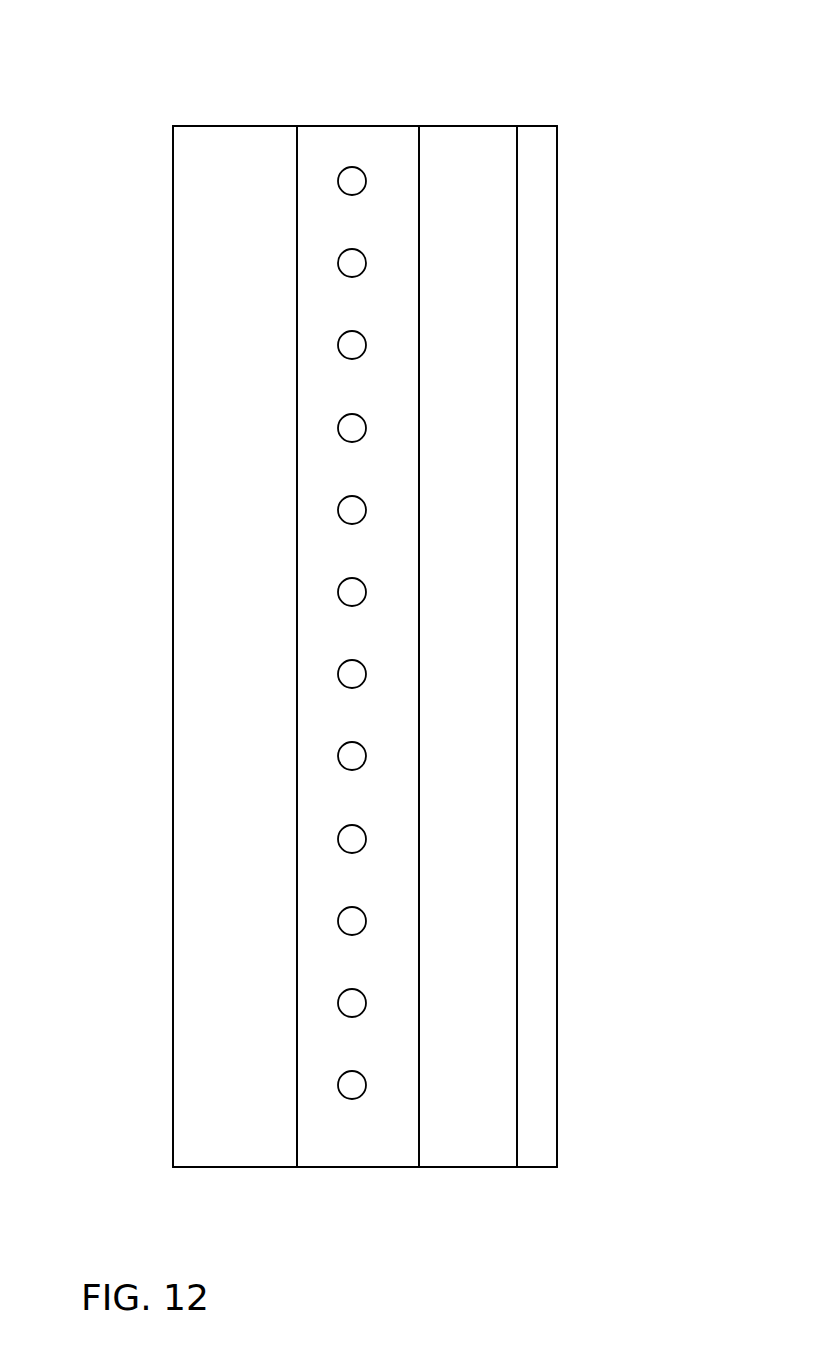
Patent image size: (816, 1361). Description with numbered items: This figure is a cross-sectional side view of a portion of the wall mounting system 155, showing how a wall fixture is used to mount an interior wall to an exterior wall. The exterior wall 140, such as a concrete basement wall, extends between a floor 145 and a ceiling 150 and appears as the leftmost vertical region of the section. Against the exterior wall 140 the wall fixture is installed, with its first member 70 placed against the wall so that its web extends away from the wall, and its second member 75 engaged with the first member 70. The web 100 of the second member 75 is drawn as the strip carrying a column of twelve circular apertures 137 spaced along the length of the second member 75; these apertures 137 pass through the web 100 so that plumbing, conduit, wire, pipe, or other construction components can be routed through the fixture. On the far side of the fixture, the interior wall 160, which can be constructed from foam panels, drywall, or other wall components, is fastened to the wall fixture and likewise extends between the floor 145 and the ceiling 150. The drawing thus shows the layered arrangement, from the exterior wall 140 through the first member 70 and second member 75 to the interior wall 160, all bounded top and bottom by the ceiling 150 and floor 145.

The panel assembly 155 is at (112, 93).
The exterior wall 140 is at (240, 647).
The second member 75 is at (338, 126).
The web 100 is at (338, 1138).
The apertures 137 is at (351, 1085).
The first member 70 is at (461, 126).
The interior wall 160 is at (529, 660).
The ceiling 150 is at (557, 126).
The floor 145 is at (557, 1167).